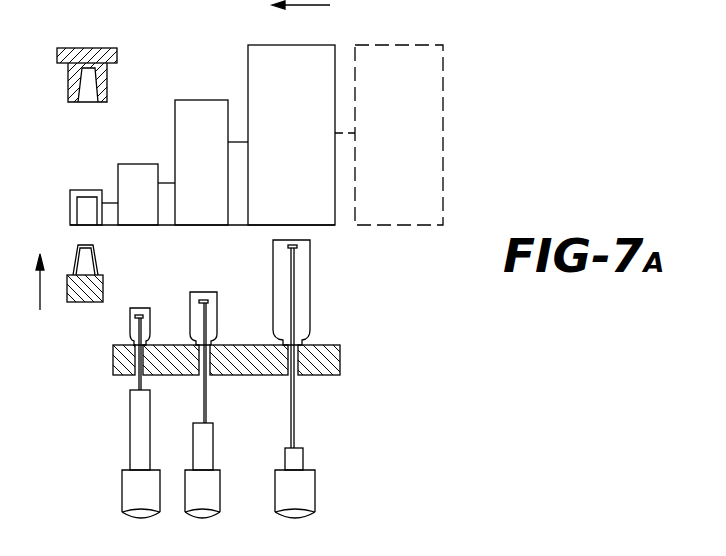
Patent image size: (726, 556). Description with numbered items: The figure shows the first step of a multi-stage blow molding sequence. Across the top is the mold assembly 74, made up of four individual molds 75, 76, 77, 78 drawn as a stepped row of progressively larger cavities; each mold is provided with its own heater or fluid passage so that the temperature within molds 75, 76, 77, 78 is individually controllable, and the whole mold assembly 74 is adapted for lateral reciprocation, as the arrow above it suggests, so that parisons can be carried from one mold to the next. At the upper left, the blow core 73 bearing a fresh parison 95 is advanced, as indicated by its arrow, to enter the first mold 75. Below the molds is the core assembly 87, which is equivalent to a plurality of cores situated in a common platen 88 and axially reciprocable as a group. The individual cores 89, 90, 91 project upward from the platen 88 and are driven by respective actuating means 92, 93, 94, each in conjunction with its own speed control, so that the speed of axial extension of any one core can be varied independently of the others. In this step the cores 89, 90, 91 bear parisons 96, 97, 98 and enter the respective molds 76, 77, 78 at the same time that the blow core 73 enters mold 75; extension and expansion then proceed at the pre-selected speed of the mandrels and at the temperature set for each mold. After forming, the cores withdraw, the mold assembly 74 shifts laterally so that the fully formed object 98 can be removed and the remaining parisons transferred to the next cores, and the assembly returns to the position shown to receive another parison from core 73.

The blow core 73 is at (68, 295).
The mold assembly 74 is at (358, 31).
The mold 75 is at (85, 190).
The mold 76 is at (143, 164).
The mold 77 is at (201, 100).
The mold 78 is at (280, 45).
The core assembly 87 is at (314, 386).
The common platen 88 is at (340, 365).
The core 89 is at (138, 378).
The core 90 is at (206, 413).
The core 91 is at (295, 428).
The actuating means 92 is at (152, 505).
The actuating means 93 is at (216, 500).
The actuating means 94 is at (295, 506).
The parison 95 is at (97, 265).
The parison 96 is at (151, 309).
The parison 97 is at (217, 301).
The parison 98 is at (310, 288).